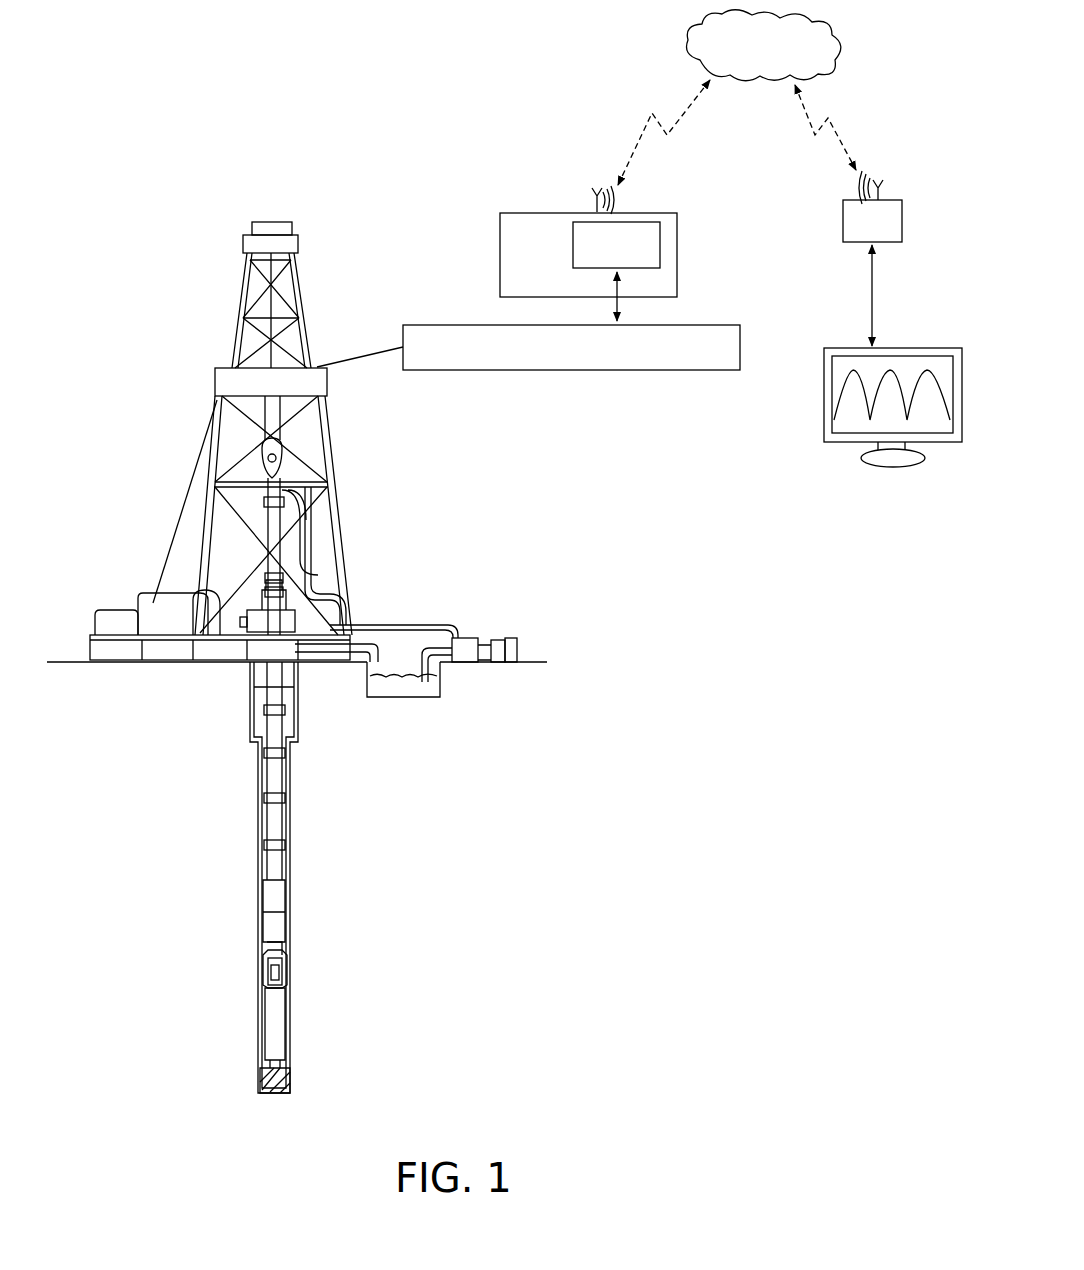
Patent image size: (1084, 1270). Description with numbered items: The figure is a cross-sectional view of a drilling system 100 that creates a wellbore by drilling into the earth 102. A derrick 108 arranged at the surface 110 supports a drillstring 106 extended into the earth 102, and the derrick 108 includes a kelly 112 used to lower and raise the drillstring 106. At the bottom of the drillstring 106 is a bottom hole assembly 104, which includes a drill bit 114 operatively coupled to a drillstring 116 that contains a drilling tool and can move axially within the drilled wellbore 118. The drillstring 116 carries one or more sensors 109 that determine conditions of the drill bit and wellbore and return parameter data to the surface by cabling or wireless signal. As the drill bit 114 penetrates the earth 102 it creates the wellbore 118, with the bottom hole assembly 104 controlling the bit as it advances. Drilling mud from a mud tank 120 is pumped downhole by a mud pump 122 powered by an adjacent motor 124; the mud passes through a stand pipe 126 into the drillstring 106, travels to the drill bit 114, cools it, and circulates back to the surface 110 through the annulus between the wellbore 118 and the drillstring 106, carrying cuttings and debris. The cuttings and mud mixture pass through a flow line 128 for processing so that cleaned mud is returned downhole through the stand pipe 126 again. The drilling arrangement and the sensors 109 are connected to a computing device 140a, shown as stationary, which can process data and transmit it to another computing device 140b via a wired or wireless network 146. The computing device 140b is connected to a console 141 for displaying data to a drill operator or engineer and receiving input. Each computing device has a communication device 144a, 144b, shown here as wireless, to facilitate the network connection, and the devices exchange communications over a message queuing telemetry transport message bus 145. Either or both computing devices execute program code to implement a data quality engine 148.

The drilling system 100 is at (594, 840).
The earth 102 is at (134, 707).
The bottom hole assembly 104 is at (203, 912).
The drillstring 106 is at (276, 822).
The derrick 108 is at (218, 452).
The sensors 109 is at (283, 968).
The surface 110 is at (57, 660).
The kelly 112 is at (281, 459).
The drill bit 114 is at (291, 1083).
The drillstring 116 is at (274, 1028).
The wellbore 118 is at (258, 782).
The mud tank 120 is at (408, 692).
The mud pump 122 is at (470, 638).
The motor 124 is at (503, 650).
The stand pipe 126 is at (310, 548).
The flow line 128 is at (384, 647).
The computing device 140a is at (582, 214).
The computing device 140b is at (889, 233).
The console 141 is at (848, 445).
The communication device 144a is at (600, 195).
The communication device 144b is at (874, 176).
The message queuing telemetry transport message bus 145 is at (662, 372).
The network 146 is at (782, 57).
The data quality engine 148 is at (573, 240).